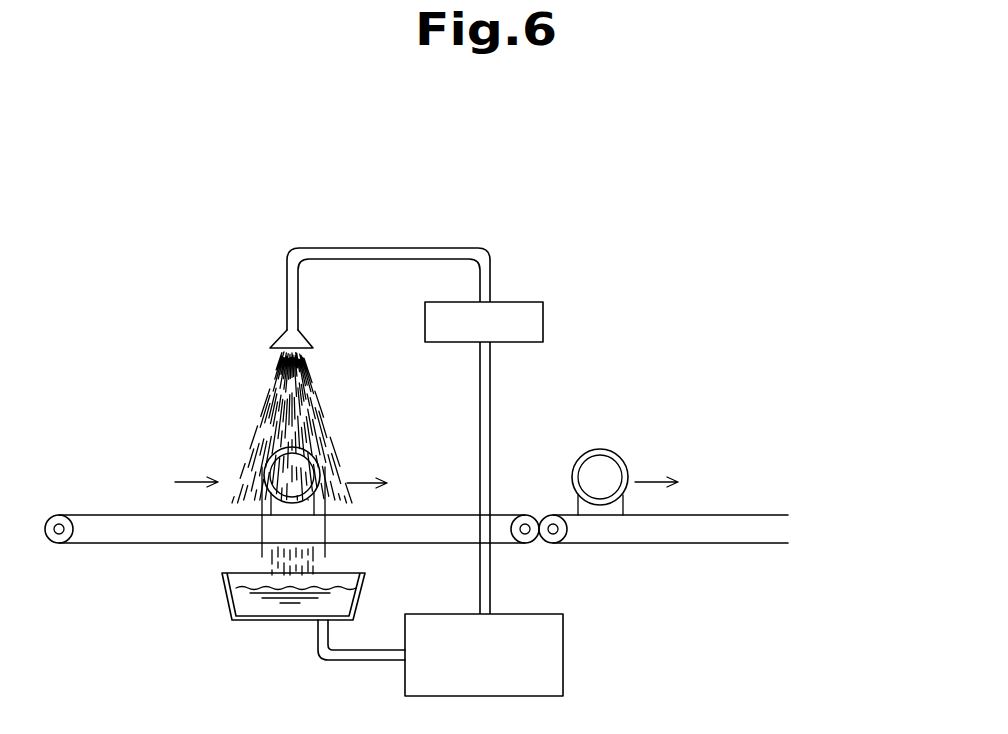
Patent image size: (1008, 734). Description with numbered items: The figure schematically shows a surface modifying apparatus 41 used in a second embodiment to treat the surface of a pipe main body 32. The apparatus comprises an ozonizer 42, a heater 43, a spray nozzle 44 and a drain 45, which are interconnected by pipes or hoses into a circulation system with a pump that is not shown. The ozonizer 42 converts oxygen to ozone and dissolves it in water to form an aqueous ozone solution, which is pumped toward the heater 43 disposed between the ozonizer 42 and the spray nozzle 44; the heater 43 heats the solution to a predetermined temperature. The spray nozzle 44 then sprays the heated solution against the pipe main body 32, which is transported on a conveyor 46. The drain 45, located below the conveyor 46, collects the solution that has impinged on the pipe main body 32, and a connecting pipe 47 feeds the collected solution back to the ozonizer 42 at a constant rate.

The surface modifying apparatus 41 is at (577, 283).
The ozonizer 42 is at (563, 672).
The heater 43 is at (543, 323).
The spray nozzle 44 is at (302, 333).
The drain 45 is at (365, 582).
The conveyor 46 is at (107, 515).
The connecting pipe 47 is at (357, 662).
The pipe main body 32 is at (264, 462).